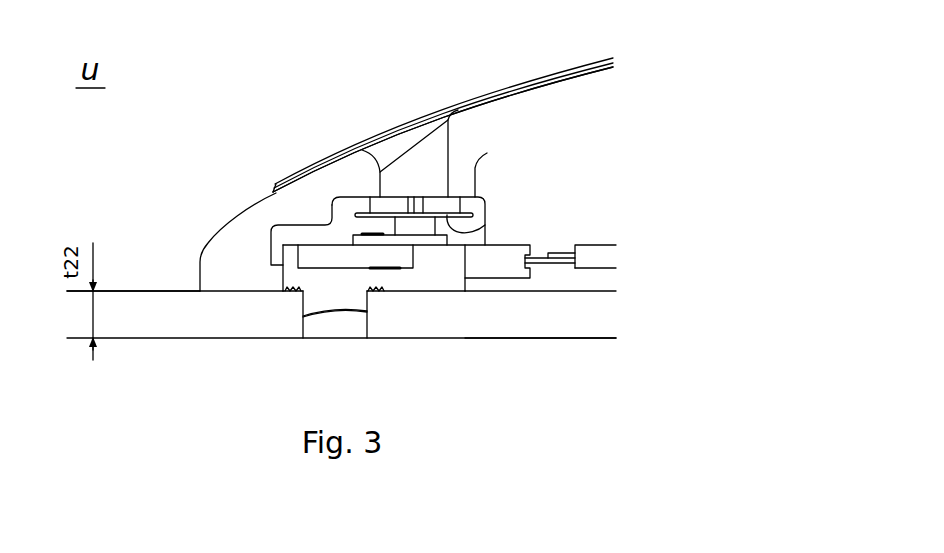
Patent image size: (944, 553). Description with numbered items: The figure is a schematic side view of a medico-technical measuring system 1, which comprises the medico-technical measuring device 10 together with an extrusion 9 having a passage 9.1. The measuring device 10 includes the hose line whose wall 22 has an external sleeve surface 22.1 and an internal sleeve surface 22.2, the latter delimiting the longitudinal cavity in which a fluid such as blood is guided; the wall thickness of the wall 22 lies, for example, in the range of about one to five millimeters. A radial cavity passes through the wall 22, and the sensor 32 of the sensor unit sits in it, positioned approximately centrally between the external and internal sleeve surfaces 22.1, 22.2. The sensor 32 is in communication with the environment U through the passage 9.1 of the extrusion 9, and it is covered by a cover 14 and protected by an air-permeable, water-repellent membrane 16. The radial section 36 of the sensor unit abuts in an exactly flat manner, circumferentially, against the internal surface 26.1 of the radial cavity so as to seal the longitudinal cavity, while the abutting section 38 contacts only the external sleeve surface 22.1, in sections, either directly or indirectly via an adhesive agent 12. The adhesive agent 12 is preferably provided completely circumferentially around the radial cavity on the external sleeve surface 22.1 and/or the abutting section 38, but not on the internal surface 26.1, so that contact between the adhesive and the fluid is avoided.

The medico-technical measuring system 1 is at (478, 58).
The extrusion 9 is at (259, 207).
The passage 9.1 is at (420, 160).
The medico-technical measuring device 10 is at (527, 175).
The adhesive agent 12 is at (288, 298).
The cover 14 is at (432, 169).
The air-permeable, water-repellent membrane 16 is at (485, 225).
The wall 22 is at (176, 324).
The external sleeve surface 22.1 is at (118, 290).
The internal sleeve surface 22.2 is at (583, 338).
The internal surface 26.1 is at (360, 313).
The sensor 32 is at (337, 312).
The radial section 36 is at (313, 302).
The abutting section 38 is at (295, 278).